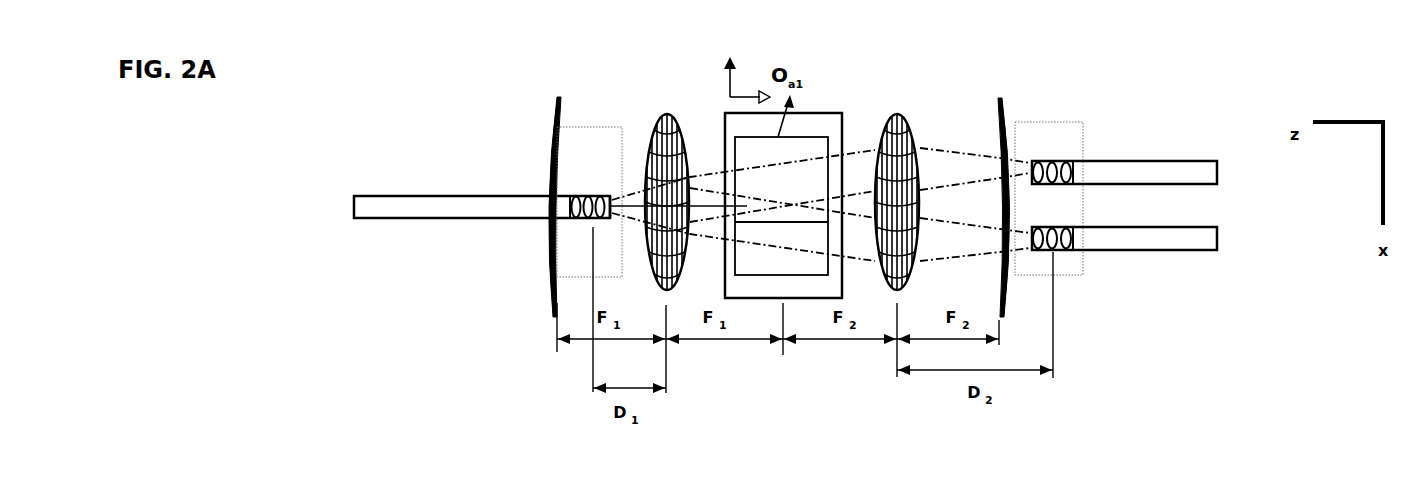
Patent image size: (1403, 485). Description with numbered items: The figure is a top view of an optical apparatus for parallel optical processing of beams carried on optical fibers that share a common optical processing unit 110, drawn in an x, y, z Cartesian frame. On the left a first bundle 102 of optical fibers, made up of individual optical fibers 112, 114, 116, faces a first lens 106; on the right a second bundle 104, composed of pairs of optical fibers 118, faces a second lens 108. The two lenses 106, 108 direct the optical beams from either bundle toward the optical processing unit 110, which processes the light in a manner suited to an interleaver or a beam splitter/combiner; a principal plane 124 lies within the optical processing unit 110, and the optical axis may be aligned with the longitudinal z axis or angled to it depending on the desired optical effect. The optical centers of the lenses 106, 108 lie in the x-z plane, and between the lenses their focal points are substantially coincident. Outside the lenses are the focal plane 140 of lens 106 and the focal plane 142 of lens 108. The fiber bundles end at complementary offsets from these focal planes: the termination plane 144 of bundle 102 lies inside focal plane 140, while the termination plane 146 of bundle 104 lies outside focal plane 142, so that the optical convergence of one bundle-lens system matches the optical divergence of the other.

The first bundle of optical fibers 102 is at (480, 160).
The second bundle of optical fibers 104 is at (1173, 145).
The lens 106 is at (667, 113).
The lens 108 is at (897, 113).
The optical processing unit 110 is at (752, 152).
The optical fiber 112 is at (609, 196).
The optical fiber 114 is at (598, 196).
The optical fiber 116 is at (585, 196).
The pair of optical fibers 118 is at (1140, 240).
The principal plane 124 is at (839, 116).
The focal plane 140 is at (557, 96).
The focal plane 142 is at (1000, 97).
The termination plane 144 is at (620, 127).
The termination plane 146 is at (1077, 128).